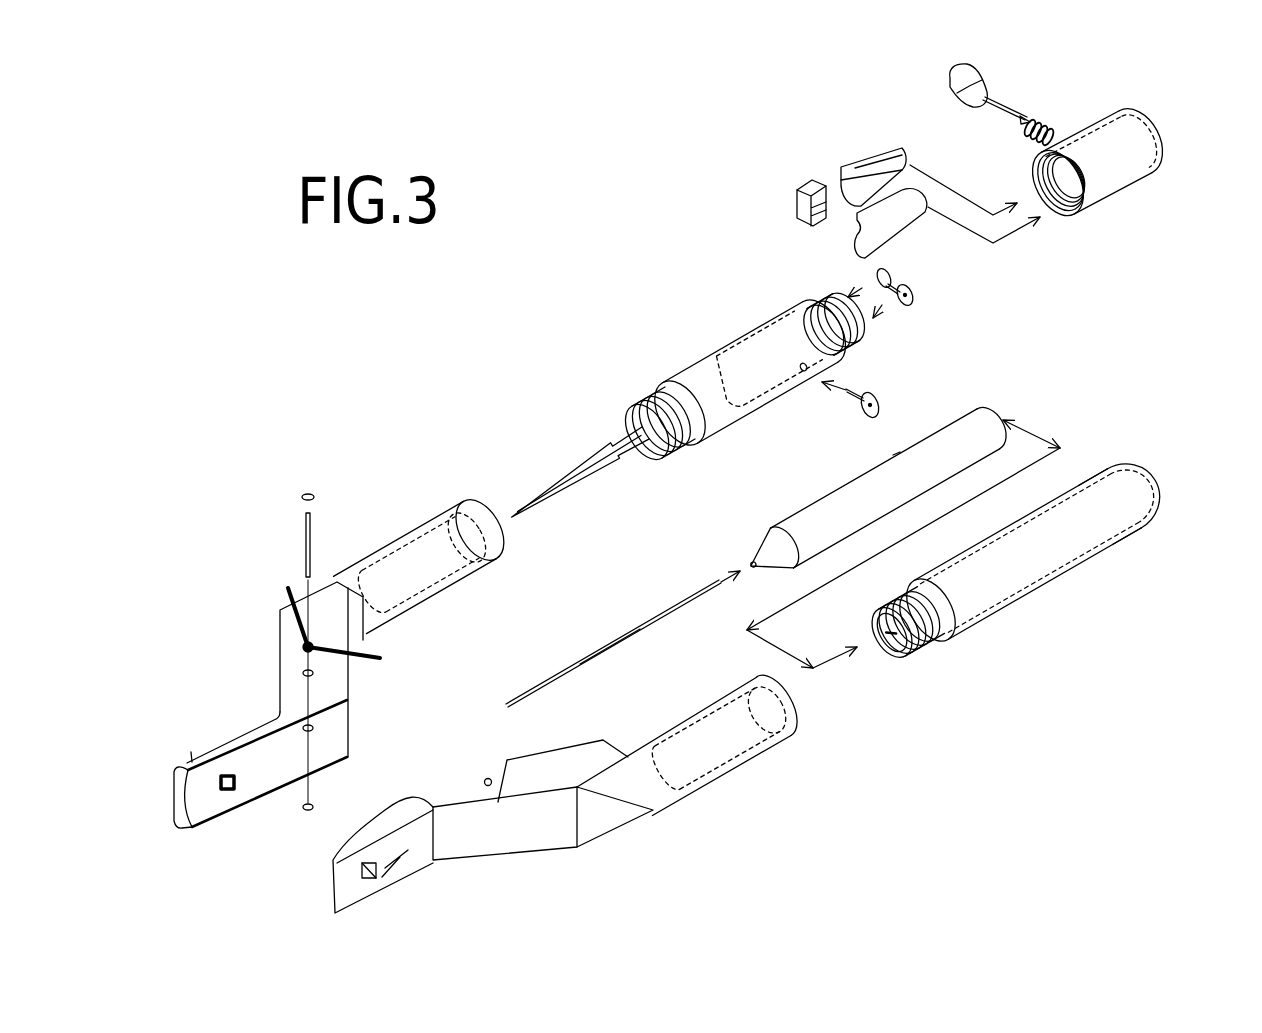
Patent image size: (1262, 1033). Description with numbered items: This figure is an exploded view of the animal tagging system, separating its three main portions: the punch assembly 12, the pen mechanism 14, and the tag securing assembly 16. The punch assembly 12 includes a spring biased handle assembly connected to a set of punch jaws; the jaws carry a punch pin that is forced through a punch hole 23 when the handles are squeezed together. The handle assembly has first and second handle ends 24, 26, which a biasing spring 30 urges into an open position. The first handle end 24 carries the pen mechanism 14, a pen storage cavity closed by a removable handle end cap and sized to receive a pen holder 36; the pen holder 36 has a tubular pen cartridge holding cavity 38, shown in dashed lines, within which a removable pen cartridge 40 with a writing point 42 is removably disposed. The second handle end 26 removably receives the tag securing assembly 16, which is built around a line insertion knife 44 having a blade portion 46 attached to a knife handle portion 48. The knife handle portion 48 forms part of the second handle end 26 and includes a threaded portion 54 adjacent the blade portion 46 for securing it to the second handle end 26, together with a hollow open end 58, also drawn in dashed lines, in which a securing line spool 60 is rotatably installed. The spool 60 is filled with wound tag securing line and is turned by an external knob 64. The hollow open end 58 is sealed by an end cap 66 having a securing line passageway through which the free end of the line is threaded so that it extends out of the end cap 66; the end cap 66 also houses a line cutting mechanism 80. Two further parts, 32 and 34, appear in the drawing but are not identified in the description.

The punch assembly 12 is at (596, 790).
The pen mechanism 14 is at (896, 453).
The tag securing assembly 16 is at (643, 365).
The punch hole 23 is at (366, 876).
The first handle end 24 is at (728, 768).
The second handle end 26 is at (399, 540).
The biasing spring 30 is at (290, 625).
The tube 32 is at (983, 590).
The tube end 34 is at (1143, 453).
The pen holder 36 is at (924, 507).
The tubular pen cartridge holding cavity 38 is at (814, 545).
The removable pen cartridge 40 is at (590, 667).
The writing point 42 is at (507, 703).
The line insertion knife 44 is at (677, 377).
The blade portion 46 is at (605, 472).
The knife handle portion 48 is at (622, 410).
The threaded portion 54 is at (670, 447).
The hollow open end 58 is at (745, 377).
The securing line spool 60 is at (870, 273).
The external knob 64 is at (877, 392).
The end cap 66 is at (1150, 128).
The line cutting mechanism 80 is at (962, 90).